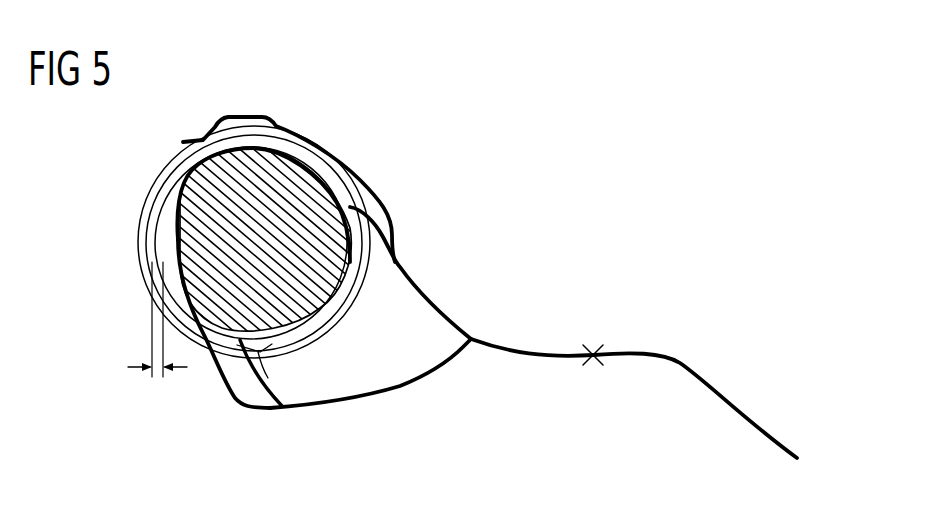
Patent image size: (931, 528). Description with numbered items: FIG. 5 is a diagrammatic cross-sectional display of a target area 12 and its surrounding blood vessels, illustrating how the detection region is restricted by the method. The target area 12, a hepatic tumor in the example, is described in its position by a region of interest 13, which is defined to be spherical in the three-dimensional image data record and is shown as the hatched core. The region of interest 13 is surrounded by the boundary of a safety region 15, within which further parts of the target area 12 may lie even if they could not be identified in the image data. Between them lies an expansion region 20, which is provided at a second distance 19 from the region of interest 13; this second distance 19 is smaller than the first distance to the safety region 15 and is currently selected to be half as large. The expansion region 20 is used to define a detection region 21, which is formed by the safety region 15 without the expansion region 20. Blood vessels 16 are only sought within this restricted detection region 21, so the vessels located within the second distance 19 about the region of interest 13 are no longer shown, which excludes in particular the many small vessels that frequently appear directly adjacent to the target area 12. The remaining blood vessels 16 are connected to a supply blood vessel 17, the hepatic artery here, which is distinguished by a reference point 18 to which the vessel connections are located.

The target area 12 is at (186, 172).
The region of interest 13 is at (153, 222).
The safety region 15 is at (158, 168).
The blood vessels 16 is at (401, 245).
The supply blood vessel 17 is at (677, 360).
The reference point 18 is at (593, 351).
The second distance 19 is at (155, 380).
The expansion region 20 is at (153, 197).
The detection region 21 is at (290, 133).